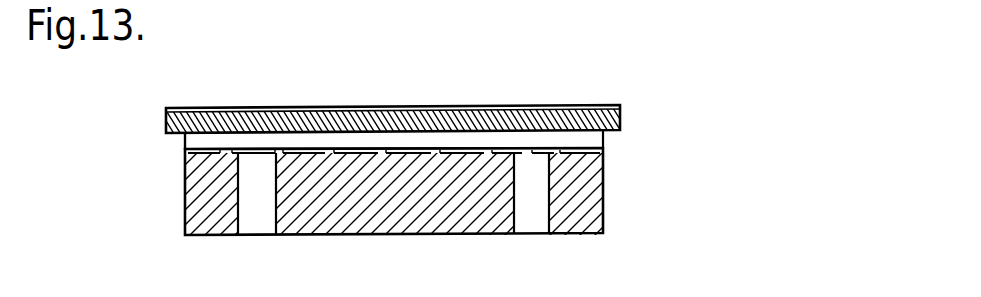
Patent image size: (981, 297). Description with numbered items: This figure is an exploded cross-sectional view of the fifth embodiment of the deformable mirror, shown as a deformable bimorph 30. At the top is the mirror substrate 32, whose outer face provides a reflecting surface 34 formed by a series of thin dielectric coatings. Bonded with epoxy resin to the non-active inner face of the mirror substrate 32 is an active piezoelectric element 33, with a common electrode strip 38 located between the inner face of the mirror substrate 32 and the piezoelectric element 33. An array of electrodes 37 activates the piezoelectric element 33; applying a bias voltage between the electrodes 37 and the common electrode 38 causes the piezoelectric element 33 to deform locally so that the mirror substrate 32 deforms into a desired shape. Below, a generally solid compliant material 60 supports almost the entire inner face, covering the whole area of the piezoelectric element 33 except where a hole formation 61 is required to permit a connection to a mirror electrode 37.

The deformable bimorph 30 is at (390, 83).
The mirror substrate 32 is at (328, 120).
The active piezoelectric element 33 is at (537, 137).
The reflecting surface 34 is at (275, 108).
The electrodes 37 is at (416, 150).
The common electrode strip 38 is at (195, 139).
The compliant material 60 is at (331, 220).
The hole formation 61 is at (533, 227).